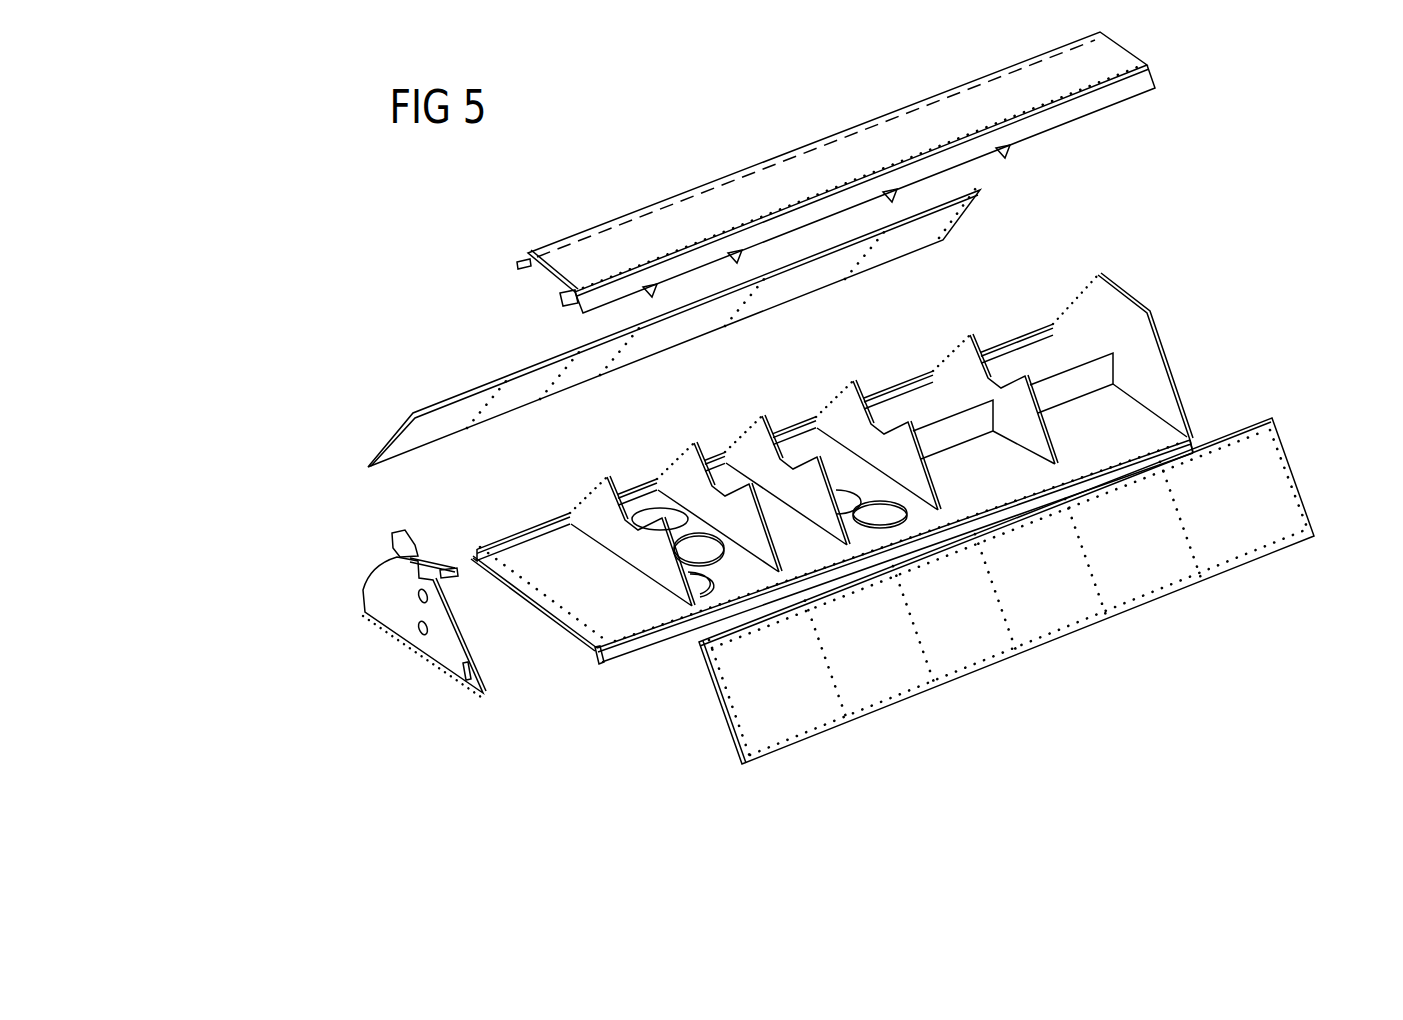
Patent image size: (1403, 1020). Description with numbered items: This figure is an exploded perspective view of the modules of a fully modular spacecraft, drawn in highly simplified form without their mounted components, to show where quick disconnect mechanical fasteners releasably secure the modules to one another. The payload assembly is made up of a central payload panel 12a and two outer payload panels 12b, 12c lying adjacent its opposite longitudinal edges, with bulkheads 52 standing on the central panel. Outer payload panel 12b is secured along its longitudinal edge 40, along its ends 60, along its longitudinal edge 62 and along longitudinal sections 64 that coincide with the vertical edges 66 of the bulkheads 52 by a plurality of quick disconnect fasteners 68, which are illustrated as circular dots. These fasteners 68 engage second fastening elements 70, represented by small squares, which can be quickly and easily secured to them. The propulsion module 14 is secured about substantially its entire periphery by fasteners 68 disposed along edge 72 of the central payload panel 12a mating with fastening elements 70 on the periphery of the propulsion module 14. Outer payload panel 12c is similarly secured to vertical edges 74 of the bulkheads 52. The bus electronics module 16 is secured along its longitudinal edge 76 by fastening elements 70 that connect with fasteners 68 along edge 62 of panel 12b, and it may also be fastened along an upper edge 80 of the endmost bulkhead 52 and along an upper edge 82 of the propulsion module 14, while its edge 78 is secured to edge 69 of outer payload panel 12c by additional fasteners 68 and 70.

The central payload panel 12a is at (852, 492).
The outer payload panel 12b is at (1011, 579).
The outer payload panel 12c is at (639, 328).
The propulsion module 14 is at (394, 600).
The bus electronics module 16 is at (811, 172).
The longitudinal edge 40 is at (788, 745).
The bulkheads 52 is at (1087, 339).
The ends 60 is at (1296, 478).
The longitudinal edge 62 is at (1250, 424).
The longitudinal sections 64 is at (984, 604).
The vertical edges 66 is at (1162, 350).
The quick disconnect mechanical fasteners 68 is at (1120, 48).
The edge 69 is at (517, 373).
The fastening elements 70 is at (1117, 88).
The edge 72 is at (513, 588).
The vertical edges 74 is at (1077, 317).
The longitudinal edge 76 is at (1040, 122).
The edge 78 is at (763, 163).
The upper edge 80 is at (1099, 273).
The upper edge 82 is at (398, 558).